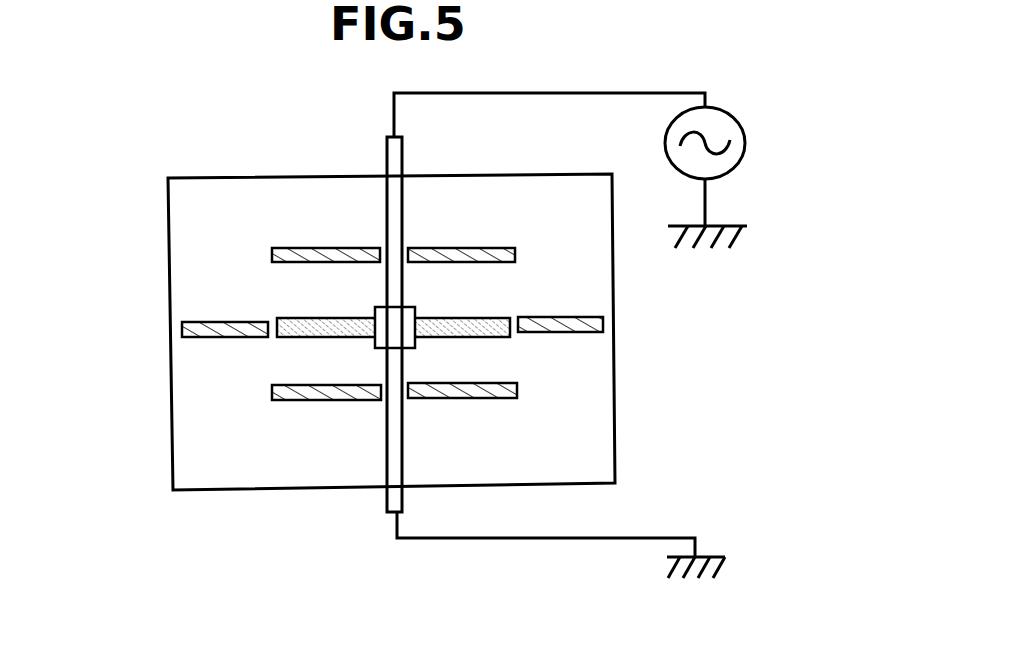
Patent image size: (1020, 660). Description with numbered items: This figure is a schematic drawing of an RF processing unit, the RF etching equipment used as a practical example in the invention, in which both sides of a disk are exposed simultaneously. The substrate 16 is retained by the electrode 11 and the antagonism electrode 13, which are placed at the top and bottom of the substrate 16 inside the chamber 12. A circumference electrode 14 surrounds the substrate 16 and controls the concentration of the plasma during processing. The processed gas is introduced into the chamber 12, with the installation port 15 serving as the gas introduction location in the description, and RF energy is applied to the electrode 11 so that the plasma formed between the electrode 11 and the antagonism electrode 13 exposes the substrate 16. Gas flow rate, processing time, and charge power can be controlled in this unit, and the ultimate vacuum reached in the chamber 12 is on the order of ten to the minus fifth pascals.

The electrode 11 is at (383, 157).
The chamber 12 is at (172, 455).
The antagonism electrode 13 is at (317, 398).
The circumference electrode 14 is at (578, 333).
The installation port 15 is at (197, 239).
The substrate 16 is at (297, 318).